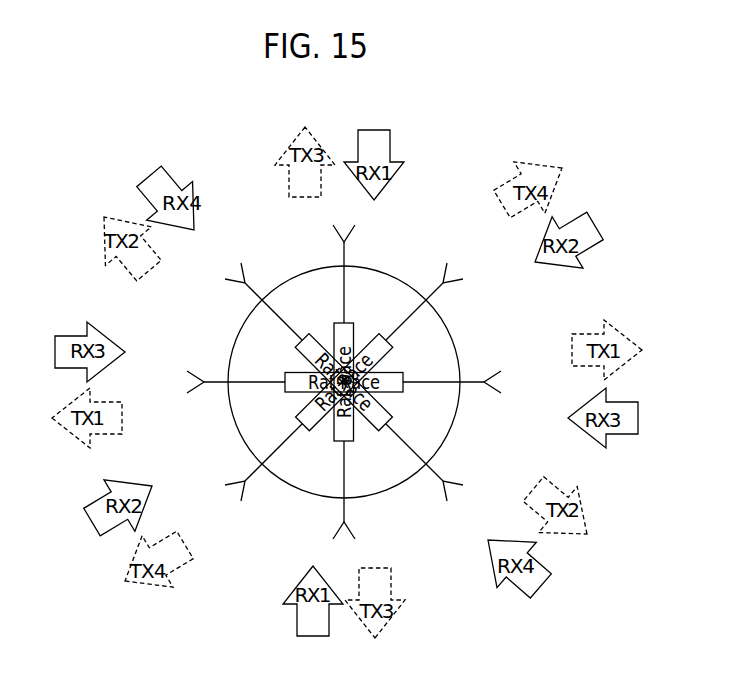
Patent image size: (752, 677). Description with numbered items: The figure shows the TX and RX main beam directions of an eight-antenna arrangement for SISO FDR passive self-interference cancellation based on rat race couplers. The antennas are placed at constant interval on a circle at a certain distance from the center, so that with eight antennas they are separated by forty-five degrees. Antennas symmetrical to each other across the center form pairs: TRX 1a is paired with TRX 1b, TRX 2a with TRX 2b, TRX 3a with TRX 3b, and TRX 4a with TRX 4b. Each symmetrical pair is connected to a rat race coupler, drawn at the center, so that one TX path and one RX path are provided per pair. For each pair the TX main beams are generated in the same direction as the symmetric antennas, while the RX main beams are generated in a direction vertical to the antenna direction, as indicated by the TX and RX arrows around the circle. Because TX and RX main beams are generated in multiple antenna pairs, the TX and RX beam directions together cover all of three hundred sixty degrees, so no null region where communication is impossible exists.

The TRX 1a antenna 1a is at (205, 381).
The TRX 1b antenna 1b is at (482, 381).
The TRX 2a antenna 2a is at (236, 296).
The TRX 2b antenna 2b is at (450, 467).
The TRX 3a antenna 3a is at (344, 262).
The TRX 3b antenna 3b is at (345, 503).
The TRX 4a antenna 4a is at (450, 297).
The TRX 4b antenna 4b is at (237, 467).